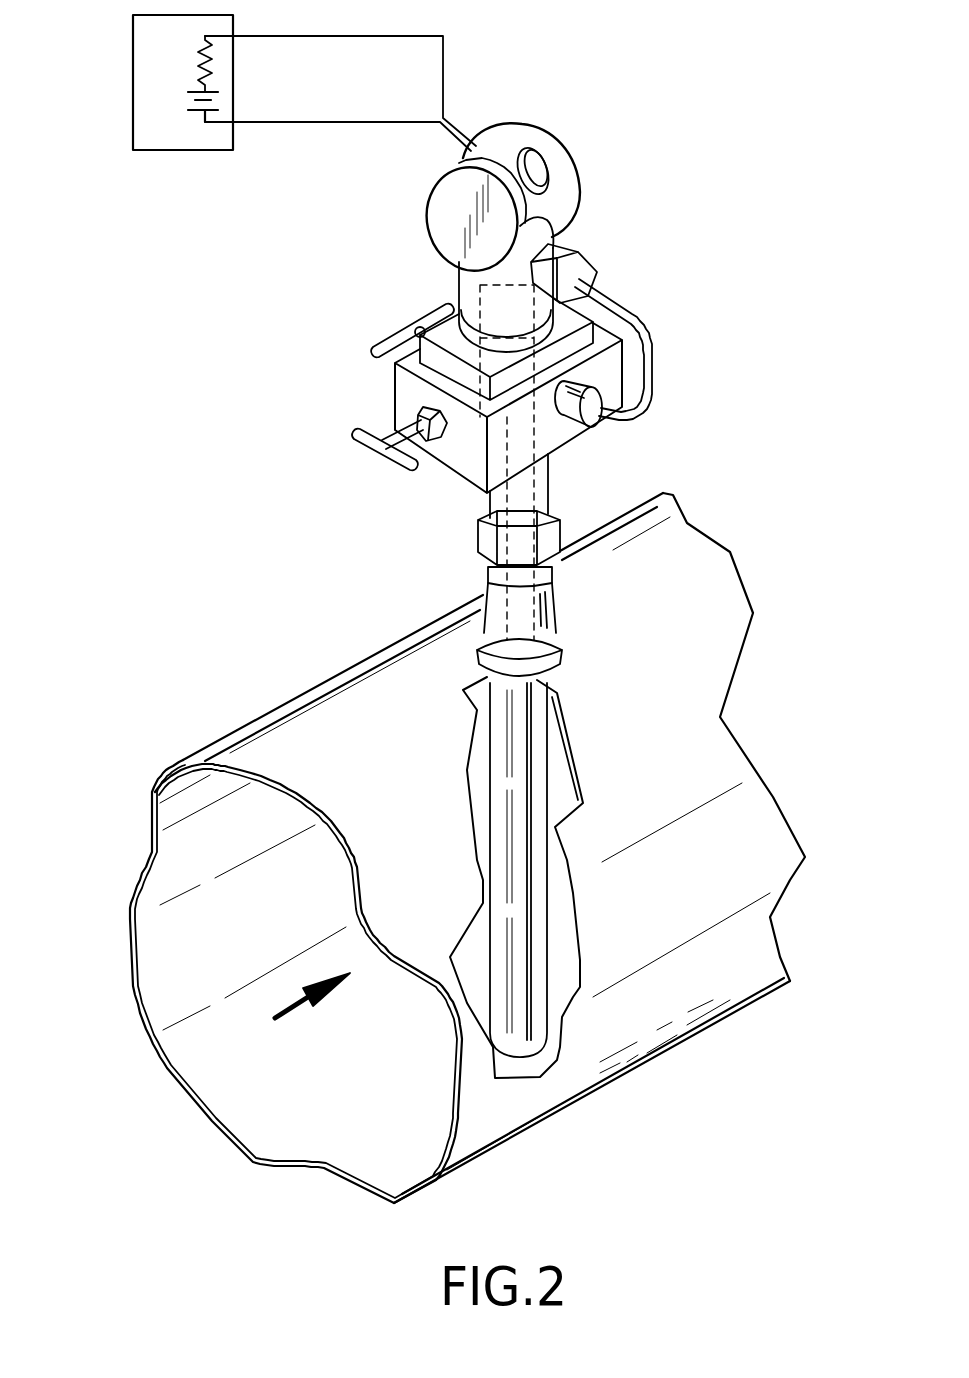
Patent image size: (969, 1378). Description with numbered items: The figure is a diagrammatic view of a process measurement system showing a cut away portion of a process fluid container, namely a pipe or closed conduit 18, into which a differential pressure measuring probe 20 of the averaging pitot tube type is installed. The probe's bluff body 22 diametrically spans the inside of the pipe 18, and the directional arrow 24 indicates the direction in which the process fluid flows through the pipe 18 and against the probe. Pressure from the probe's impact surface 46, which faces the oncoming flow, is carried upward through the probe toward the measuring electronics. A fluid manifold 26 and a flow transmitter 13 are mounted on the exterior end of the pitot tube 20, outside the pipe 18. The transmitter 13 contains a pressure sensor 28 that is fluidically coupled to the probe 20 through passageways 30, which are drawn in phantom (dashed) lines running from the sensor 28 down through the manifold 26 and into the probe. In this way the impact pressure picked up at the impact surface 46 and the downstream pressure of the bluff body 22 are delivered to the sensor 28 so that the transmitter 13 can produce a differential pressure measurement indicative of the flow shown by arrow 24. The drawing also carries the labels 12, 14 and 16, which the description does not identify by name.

The flow meter assembly 12 is at (668, 296).
The flow transmitter 13 is at (563, 194).
The control room / power supply 14 is at (175, 62).
The two-wire loop wiring 16 is at (293, 36).
The pipe 18 is at (152, 848).
The differential pressure measuring probe 20 is at (570, 609).
The bluff body 22 is at (481, 777).
The directional arrow 24 is at (300, 1007).
The fluid manifold 26 is at (613, 373).
The pressure sensor 28 is at (460, 293).
The passageways 30 is at (495, 497).
The impact surface 46 is at (521, 1040).